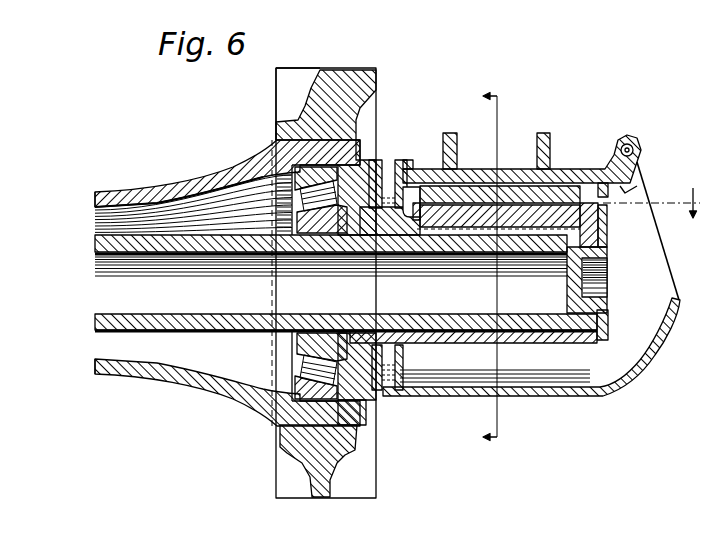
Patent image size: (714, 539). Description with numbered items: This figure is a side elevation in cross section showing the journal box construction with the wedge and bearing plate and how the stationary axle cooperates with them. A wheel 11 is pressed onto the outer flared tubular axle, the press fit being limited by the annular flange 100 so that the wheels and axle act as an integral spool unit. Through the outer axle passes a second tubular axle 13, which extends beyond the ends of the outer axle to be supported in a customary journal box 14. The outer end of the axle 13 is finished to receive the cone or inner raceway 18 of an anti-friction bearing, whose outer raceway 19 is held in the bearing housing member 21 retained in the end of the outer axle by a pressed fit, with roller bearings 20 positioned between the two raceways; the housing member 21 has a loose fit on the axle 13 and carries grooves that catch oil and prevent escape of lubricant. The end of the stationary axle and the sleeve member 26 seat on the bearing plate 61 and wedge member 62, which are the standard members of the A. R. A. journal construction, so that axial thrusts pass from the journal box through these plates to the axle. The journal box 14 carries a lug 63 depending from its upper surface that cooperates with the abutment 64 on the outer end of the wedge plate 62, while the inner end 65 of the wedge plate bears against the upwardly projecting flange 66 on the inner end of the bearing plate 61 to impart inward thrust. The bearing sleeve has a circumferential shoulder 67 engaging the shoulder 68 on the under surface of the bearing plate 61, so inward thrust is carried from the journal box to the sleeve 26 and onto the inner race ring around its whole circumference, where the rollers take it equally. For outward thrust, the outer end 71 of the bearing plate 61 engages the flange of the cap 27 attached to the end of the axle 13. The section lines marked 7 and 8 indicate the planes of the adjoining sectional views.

The wheel 11 is at (321, 499).
The annular flange 100 is at (276, 130).
The second tubular axle 13 is at (353, 254).
The outer raceway 19 is at (273, 428).
The inner raceway 18 is at (297, 337).
The roller bearings 20 is at (298, 368).
The bearing housing member 21 is at (318, 283).
The sleeve member 26 is at (431, 222).
The inner end of the wedge plate 65 is at (405, 168).
The upwardly projecting flange 66 is at (398, 190).
The journal box 14 is at (630, 378).
The wedge member 62 is at (460, 192).
The bearing plate 61 is at (482, 206).
The shoulder 68 is at (458, 229).
The outer end of the bearing plate 71 is at (603, 207).
The abutment 64 is at (603, 204).
The lug 63 is at (628, 193).
The cap 27 is at (608, 318).
The circumferential shoulder 67 is at (417, 340).
The section line 8- 8 is at (496, 267).
The section line 7- 7 is at (654, 200).